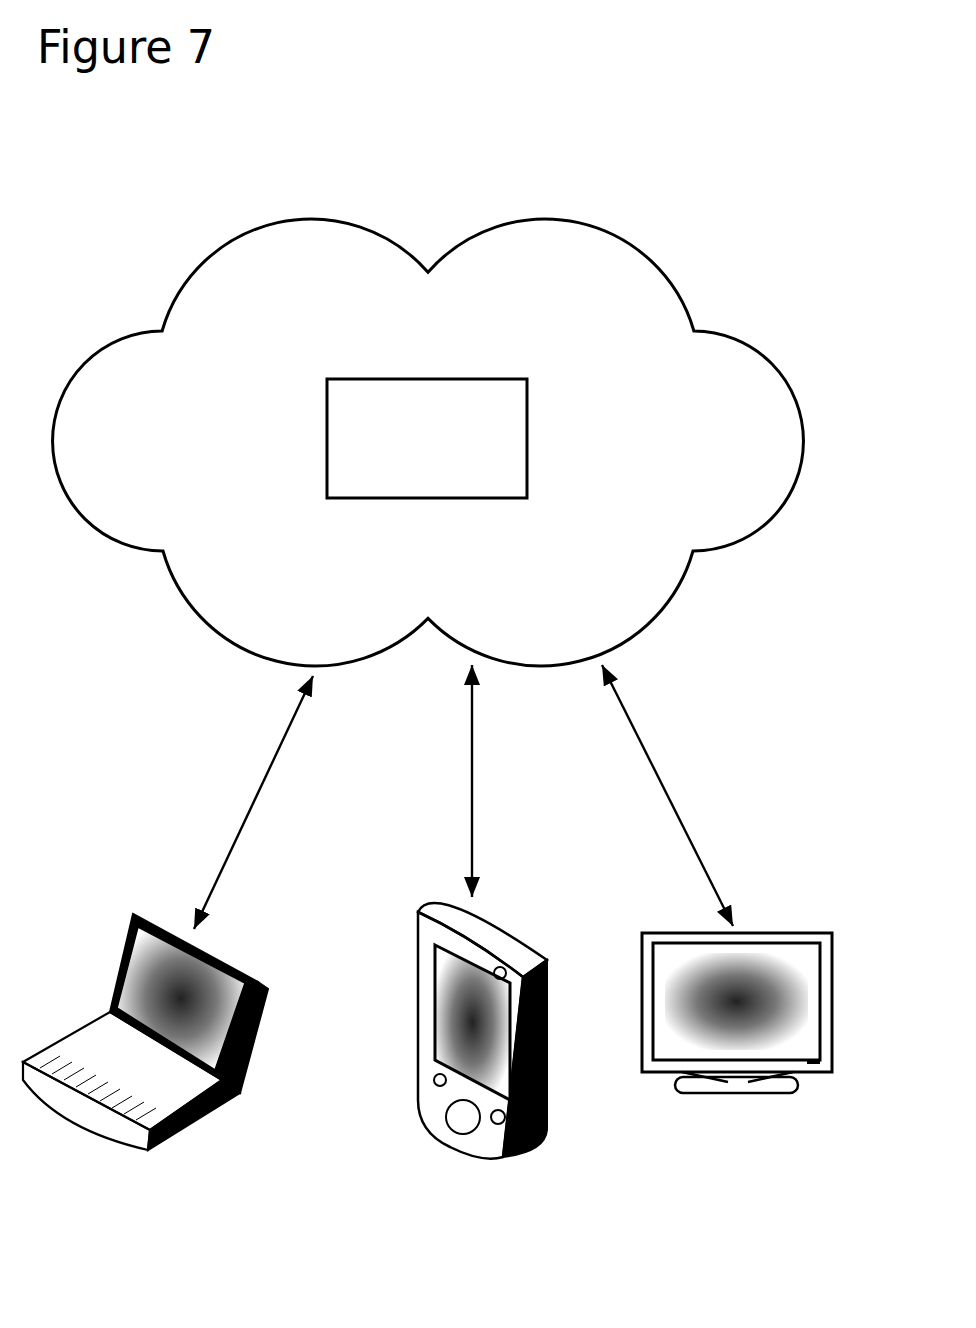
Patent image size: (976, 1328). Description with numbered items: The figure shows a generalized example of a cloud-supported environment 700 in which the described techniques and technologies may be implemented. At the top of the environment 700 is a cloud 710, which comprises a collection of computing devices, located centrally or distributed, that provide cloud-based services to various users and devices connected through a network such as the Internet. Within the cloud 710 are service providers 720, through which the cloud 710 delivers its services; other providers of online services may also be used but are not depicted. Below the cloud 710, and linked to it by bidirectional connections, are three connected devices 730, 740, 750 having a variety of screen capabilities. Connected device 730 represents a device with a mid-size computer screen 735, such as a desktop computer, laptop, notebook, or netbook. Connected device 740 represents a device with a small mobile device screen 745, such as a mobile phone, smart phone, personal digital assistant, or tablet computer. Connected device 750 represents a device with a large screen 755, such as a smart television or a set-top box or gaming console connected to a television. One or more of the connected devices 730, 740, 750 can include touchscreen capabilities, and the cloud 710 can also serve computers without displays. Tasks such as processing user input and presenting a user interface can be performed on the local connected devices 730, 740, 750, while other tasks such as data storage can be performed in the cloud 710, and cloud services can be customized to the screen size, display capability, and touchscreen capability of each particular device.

The cloud-supported environment 700 is at (768, 212).
The cloud 710 is at (448, 346).
The service providers 720 is at (448, 479).
The connected device 730 is at (33, 1049).
The computer screen 735 is at (200, 1012).
The connected device 740 is at (432, 898).
The mobile device screen 745 is at (495, 1040).
The connected device 750 is at (807, 933).
The large screen 755 is at (755, 1012).